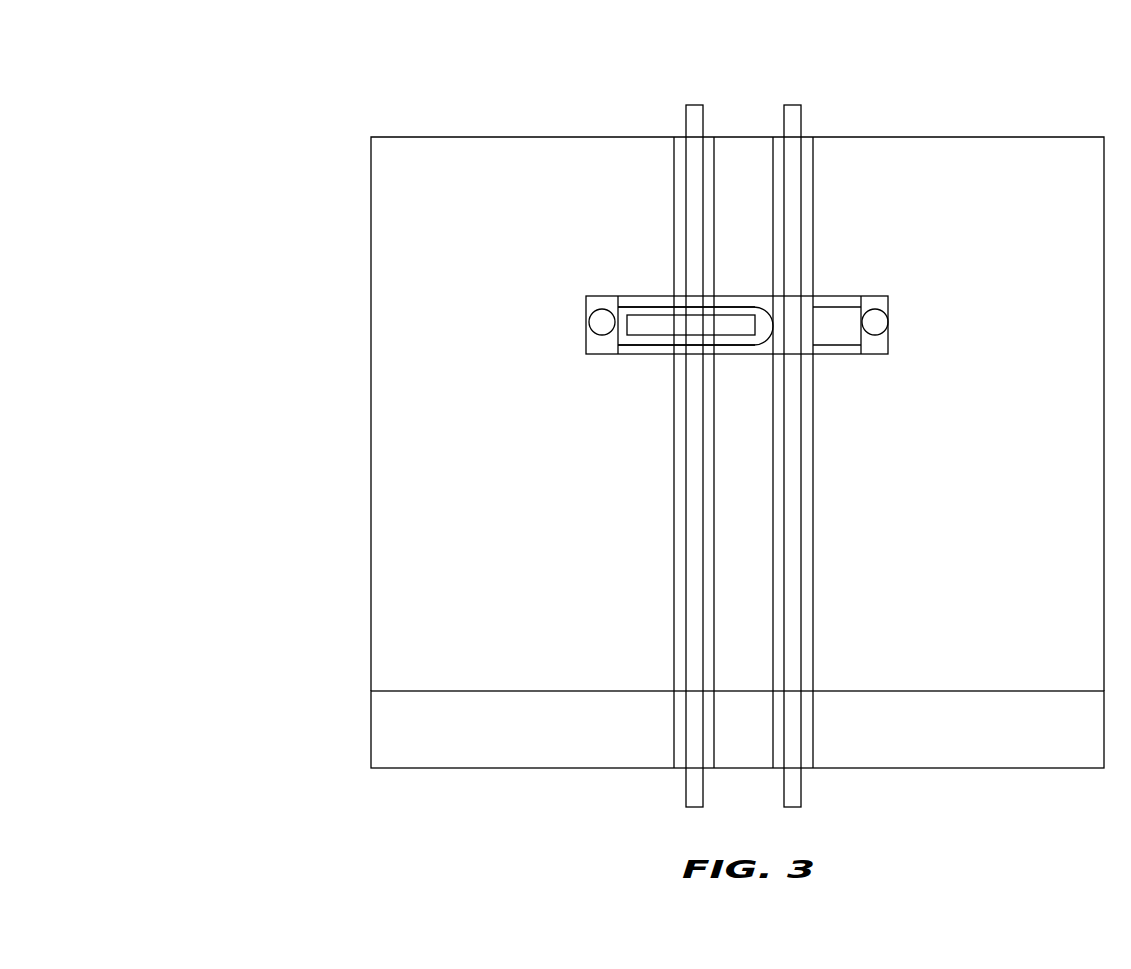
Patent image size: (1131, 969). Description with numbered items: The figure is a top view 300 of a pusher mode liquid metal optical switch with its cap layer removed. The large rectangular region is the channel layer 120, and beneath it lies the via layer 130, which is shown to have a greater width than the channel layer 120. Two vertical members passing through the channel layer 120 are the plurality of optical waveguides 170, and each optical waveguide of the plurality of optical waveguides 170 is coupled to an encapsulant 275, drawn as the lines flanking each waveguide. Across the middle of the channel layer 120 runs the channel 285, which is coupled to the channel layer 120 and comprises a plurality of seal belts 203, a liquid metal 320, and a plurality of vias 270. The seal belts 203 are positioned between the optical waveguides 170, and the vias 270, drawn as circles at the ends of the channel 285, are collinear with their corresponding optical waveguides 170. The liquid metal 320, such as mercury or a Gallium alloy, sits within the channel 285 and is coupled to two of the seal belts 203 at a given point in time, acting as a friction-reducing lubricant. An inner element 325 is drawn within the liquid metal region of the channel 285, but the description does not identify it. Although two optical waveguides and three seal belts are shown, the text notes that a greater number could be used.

The top view 300 is at (250, 183).
The channel layer 120 is at (371, 420).
The via layer 130 is at (371, 725).
The plurality of optical waveguides 170 is at (696, 112).
The encapsulant 275 is at (709, 143).
The channel 285 is at (592, 343).
The plurality of seal belts 203 is at (638, 297).
The plurality of vias 270 is at (592, 322).
The liquid metal 320 is at (772, 323).
The inner member 325 is at (652, 326).